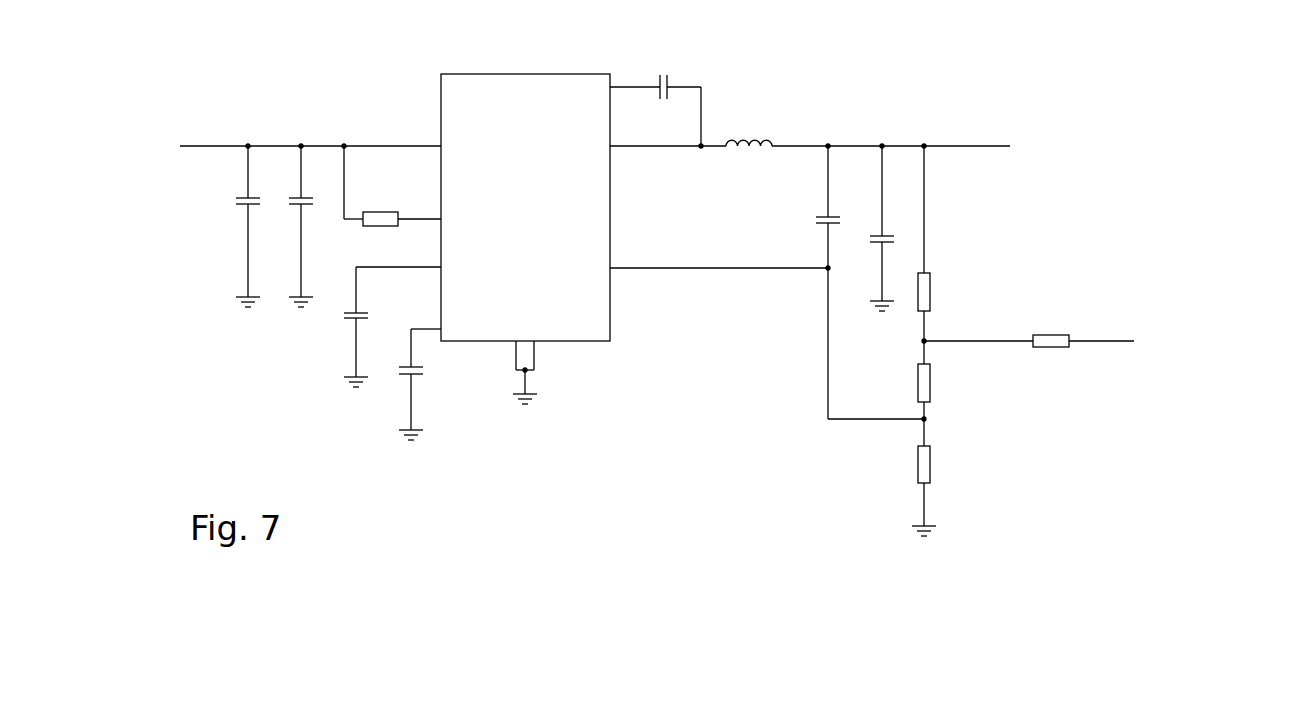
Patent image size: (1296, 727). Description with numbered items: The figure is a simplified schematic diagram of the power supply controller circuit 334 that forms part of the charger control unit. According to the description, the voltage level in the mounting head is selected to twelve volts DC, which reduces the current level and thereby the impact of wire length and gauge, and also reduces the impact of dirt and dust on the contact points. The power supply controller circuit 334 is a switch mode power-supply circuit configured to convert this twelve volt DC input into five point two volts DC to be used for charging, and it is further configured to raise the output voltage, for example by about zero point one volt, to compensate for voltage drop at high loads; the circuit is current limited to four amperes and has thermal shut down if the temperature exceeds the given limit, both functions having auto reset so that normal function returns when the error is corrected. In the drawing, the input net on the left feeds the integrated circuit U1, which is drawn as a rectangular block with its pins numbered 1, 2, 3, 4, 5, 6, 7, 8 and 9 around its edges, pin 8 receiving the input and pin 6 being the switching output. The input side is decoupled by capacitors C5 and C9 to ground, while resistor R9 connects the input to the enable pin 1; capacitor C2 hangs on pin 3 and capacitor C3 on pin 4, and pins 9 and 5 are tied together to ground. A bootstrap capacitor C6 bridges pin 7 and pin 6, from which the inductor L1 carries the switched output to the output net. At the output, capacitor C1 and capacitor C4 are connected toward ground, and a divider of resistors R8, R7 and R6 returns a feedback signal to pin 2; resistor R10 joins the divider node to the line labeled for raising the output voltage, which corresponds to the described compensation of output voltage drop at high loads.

The power supply controller circuit 334 is at (1024, 60).
The buck converter IC TPS54427DDAR U1 is at (525, 222).
The input capacitor C5 is at (253, 226).
The input capacitor C9 is at (306, 226).
The enable resistor R9 is at (392, 186).
The VREG5 capacitor C2 is at (386, 320).
The soft-start capacitor C3 is at (413, 376).
The bootstrap capacitor C6 is at (668, 103).
The output inductor L1 is at (773, 130).
The feedforward capacitor C1 is at (820, 282).
The output capacitor C4 is at (880, 228).
The feedback resistor R8 is at (934, 255).
The feedback resistor R7 is at (909, 404).
The feedback resistor R6 is at (931, 491).
The output voltage adjust resistor R10 is at (1029, 331).
The EN pin 1 is at (447, 219).
The VFB pin 2 is at (600, 268).
The VREG5 pin 3 is at (460, 267).
The SS pin 4 is at (447, 329).
The GND pin 5 is at (538, 339).
The SW pin 6 is at (602, 146).
The VBST pin 7 is at (595, 87).
The VIN pin 8 is at (450, 146).
The ETPAD pin 9 is at (520, 332).